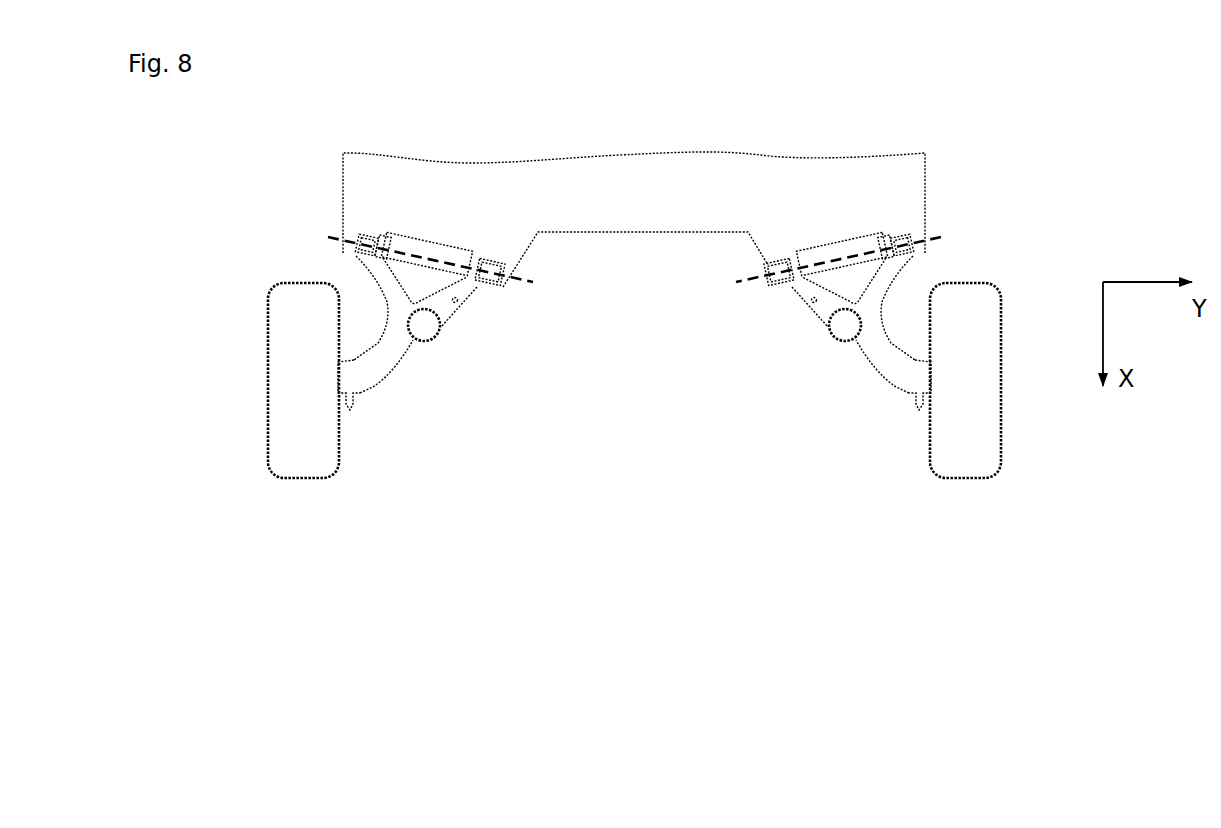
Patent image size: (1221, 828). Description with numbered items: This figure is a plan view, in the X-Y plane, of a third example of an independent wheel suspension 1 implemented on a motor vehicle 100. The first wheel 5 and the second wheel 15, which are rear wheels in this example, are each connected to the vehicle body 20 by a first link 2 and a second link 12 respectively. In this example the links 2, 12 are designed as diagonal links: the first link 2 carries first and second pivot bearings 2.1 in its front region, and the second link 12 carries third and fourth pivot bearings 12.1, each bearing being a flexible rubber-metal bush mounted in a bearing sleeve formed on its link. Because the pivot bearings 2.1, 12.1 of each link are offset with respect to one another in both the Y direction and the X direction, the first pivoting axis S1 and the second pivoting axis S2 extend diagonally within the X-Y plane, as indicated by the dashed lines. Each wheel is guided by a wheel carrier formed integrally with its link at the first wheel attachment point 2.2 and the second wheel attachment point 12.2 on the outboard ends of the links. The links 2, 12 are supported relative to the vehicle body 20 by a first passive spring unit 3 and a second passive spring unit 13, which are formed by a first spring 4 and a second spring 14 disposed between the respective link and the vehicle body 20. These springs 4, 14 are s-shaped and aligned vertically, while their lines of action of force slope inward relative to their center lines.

The motor vehicle 100 is at (650, 120).
The independent wheel suspension 1 is at (308, 251).
The first link 2 is at (477, 292).
The first and second pivot bearings 2.1 is at (354, 229).
The first wheel attachment point 2.2 is at (360, 415).
The first passive spring unit 3 is at (460, 344).
The first spring 4 is at (430, 342).
The first wheel 5 is at (308, 395).
The vehicle body 20 is at (642, 211).
The first pivoting axis S1 is at (443, 262).
The second pivoting axis S2 is at (838, 260).
The second link 12 is at (803, 298).
The third and fourth pivot bearings 12.1 is at (772, 257).
The second wheel attachment point 12.2 is at (914, 414).
The second passive spring unit 13 is at (814, 348).
The second spring 14 is at (838, 342).
The second wheel 15 is at (982, 395).